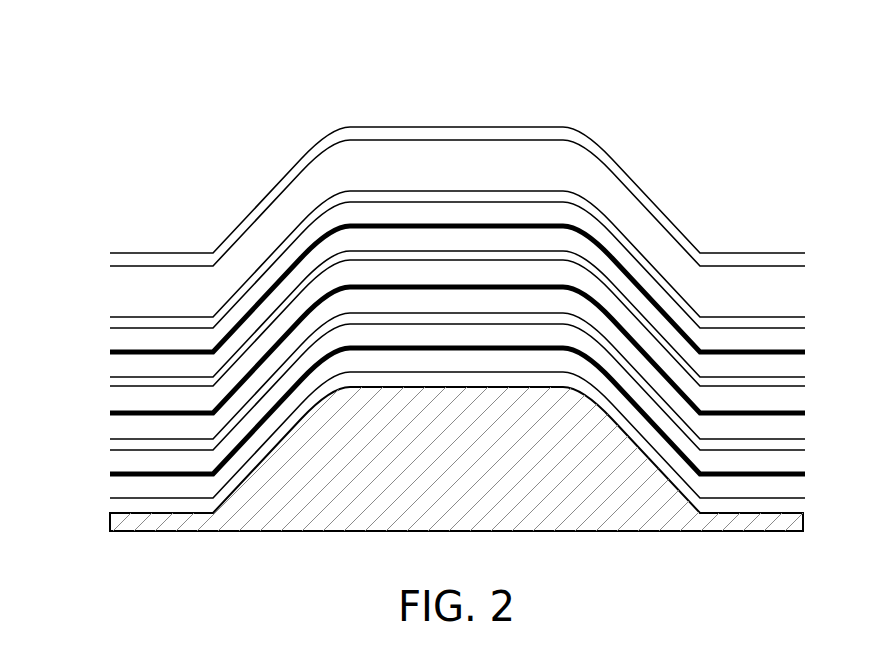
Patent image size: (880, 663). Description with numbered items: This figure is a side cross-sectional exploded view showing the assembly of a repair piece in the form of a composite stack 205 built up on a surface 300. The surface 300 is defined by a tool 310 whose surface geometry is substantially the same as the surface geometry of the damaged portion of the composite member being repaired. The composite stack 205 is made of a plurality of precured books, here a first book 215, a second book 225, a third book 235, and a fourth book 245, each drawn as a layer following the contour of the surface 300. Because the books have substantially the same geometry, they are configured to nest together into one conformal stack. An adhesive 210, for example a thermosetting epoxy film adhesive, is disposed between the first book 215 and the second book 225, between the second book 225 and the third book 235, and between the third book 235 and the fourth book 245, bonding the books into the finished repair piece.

The composite stack 205 is at (204, 94).
The adhesive 210 is at (112, 474).
The first book 215 is at (110, 513).
The second book 225 is at (110, 450).
The third book 235 is at (110, 386).
The fourth book 245 is at (110, 328).
The surface 300 is at (285, 508).
The tool 310 is at (647, 520).